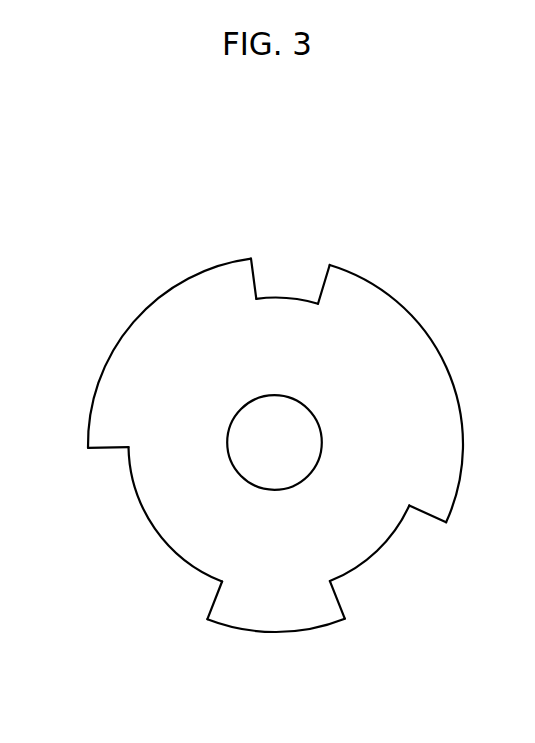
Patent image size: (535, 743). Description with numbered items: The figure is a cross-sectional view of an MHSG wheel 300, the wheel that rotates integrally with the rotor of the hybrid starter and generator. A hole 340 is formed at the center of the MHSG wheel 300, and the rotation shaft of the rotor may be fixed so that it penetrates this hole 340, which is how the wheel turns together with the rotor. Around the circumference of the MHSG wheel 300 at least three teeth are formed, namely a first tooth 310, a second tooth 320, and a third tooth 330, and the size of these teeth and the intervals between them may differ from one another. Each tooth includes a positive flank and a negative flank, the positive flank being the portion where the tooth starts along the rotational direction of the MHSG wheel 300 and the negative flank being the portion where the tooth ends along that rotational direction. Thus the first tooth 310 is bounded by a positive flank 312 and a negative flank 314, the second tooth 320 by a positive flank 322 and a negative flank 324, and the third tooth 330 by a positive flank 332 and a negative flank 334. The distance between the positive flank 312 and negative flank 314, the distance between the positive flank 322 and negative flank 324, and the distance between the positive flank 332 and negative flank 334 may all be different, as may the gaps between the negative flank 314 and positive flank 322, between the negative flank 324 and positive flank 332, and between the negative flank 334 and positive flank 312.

The MHSG wheel 300 is at (292, 183).
The first tooth 310 is at (112, 405).
The positive flank 312 is at (110, 452).
The negative flank 314 is at (257, 278).
The second tooth 320 is at (415, 353).
The positive flank 322 is at (318, 280).
The negative flank 324 is at (425, 521).
The third tooth 330 is at (274, 610).
The positive flank 332 is at (343, 595).
The negative flank 334 is at (212, 598).
The hole 340 is at (278, 437).